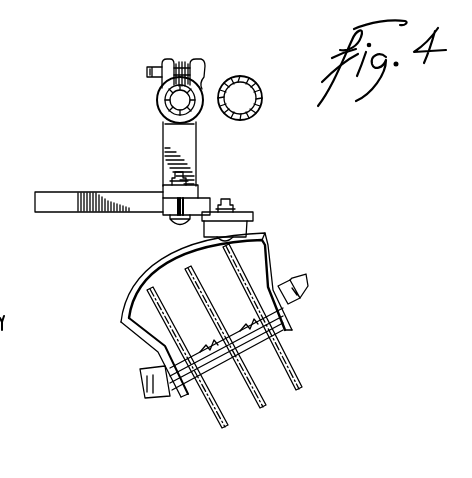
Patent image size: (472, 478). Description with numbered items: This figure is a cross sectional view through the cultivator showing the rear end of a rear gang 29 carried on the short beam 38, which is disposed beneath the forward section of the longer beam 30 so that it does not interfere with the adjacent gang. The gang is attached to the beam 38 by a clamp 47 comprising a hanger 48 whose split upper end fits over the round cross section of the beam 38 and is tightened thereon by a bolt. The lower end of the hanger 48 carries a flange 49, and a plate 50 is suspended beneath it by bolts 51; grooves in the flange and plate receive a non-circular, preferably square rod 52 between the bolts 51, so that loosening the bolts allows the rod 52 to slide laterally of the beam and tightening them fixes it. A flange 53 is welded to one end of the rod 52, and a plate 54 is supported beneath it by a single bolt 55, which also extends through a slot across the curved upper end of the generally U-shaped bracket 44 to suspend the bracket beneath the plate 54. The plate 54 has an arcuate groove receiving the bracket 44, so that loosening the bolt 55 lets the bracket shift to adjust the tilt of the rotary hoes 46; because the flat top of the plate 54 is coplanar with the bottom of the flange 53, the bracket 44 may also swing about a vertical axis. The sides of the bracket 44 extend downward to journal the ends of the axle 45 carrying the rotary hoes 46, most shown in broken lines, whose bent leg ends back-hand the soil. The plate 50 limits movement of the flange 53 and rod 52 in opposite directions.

The rear gang 29 is at (279, 251).
The beam 30 is at (241, 78).
The beam 38 is at (157, 99).
The bracket 44 is at (133, 302).
The axle 45 is at (312, 295).
The rotary hoes 46 is at (300, 372).
The clamp 47 is at (197, 152).
The hanger 48 is at (162, 125).
The flange 49 is at (206, 190).
The plate 50 is at (162, 218).
The bolts 51 is at (165, 200).
The rod 52 is at (55, 192).
The flange 53 is at (256, 218).
The plate 54 is at (182, 229).
The bolt 55 is at (234, 205).